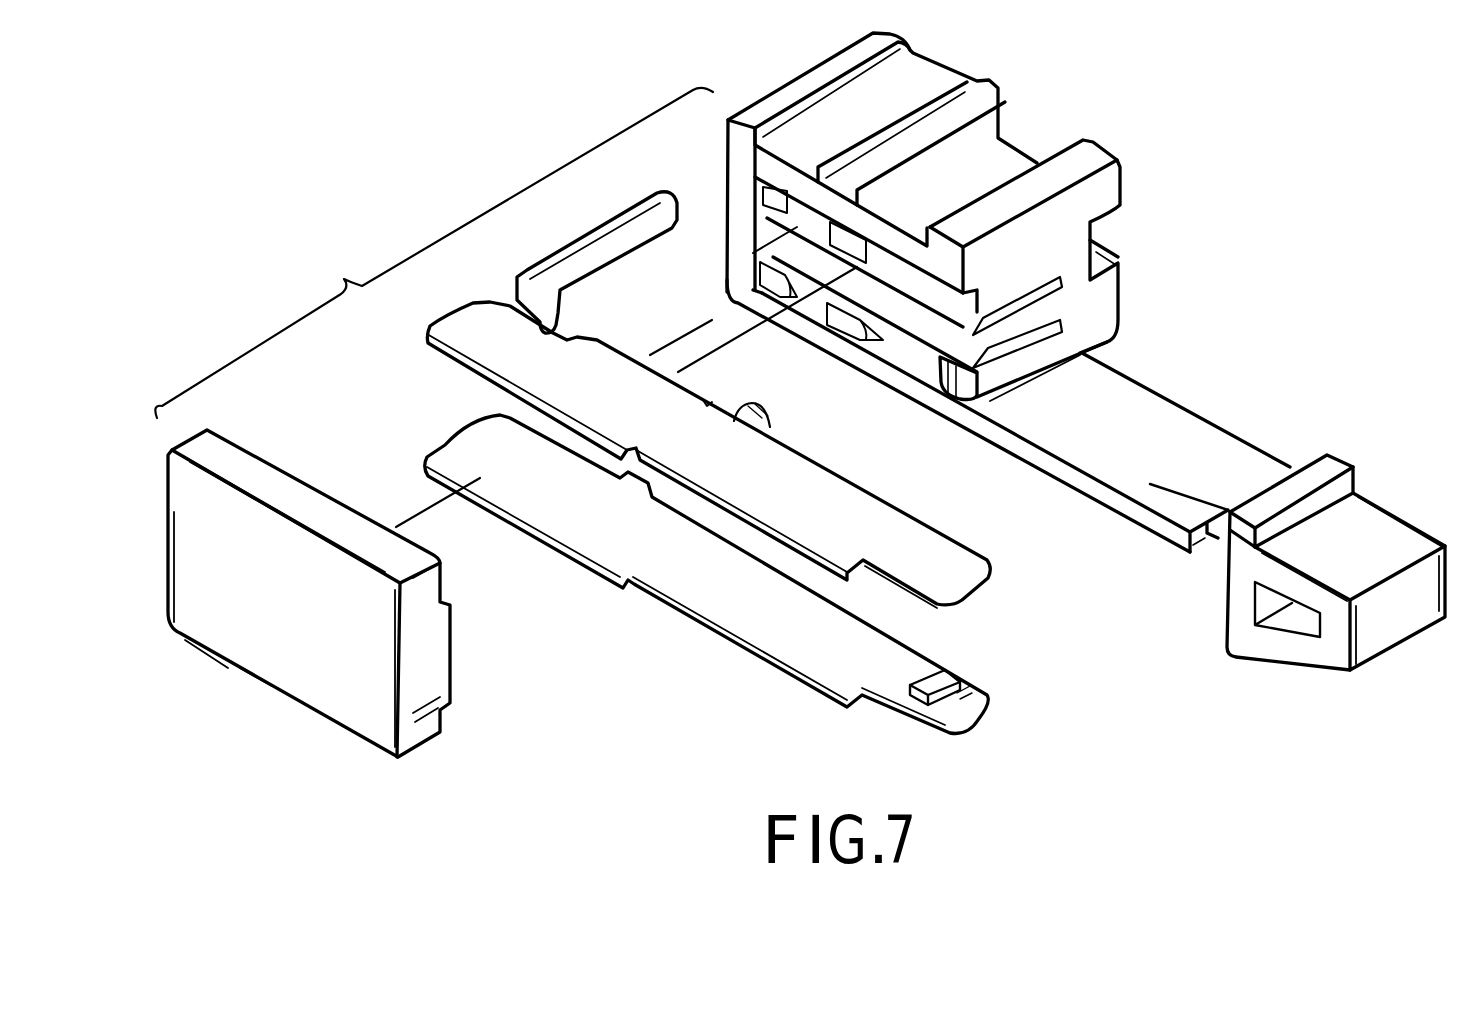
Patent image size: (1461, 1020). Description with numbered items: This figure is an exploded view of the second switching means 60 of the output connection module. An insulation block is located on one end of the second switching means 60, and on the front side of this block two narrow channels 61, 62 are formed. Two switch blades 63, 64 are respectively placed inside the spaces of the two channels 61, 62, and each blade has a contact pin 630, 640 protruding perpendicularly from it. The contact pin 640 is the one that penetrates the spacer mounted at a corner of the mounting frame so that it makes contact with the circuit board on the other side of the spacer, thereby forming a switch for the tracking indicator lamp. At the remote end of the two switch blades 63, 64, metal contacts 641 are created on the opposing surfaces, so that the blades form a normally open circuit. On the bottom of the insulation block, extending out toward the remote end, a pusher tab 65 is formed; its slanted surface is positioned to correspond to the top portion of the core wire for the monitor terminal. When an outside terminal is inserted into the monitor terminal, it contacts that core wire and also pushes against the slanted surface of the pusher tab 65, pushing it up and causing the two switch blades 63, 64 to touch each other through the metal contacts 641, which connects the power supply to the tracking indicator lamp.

The second switching means 60 is at (1010, 148).
The channel 61 is at (757, 253).
The channel 62 is at (893, 357).
The switch blade 63 is at (827, 498).
The contact pin 630 is at (613, 227).
The switch blade 64 is at (752, 638).
The contact pin 640 is at (757, 413).
The metal contact 641 is at (918, 703).
The pusher tab 65 is at (1290, 662).